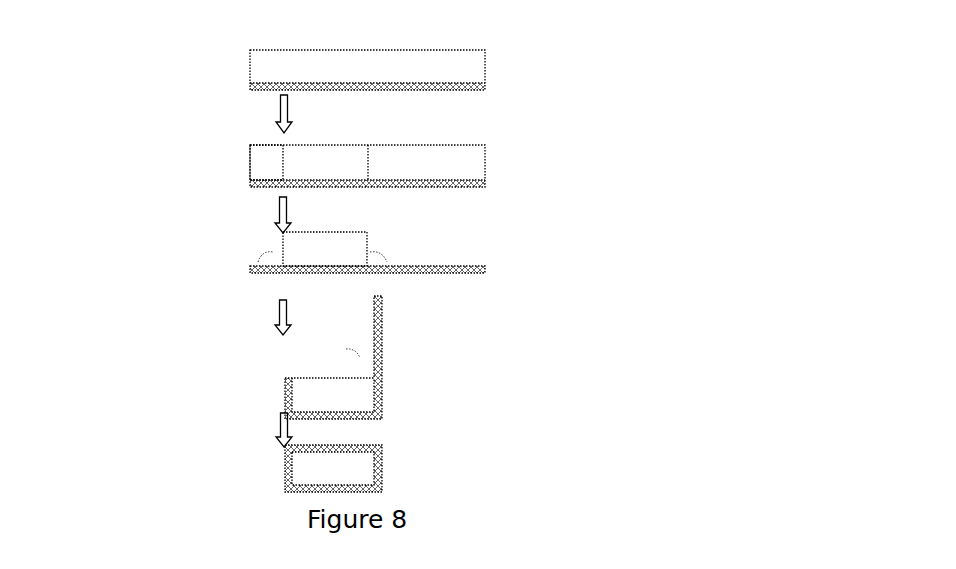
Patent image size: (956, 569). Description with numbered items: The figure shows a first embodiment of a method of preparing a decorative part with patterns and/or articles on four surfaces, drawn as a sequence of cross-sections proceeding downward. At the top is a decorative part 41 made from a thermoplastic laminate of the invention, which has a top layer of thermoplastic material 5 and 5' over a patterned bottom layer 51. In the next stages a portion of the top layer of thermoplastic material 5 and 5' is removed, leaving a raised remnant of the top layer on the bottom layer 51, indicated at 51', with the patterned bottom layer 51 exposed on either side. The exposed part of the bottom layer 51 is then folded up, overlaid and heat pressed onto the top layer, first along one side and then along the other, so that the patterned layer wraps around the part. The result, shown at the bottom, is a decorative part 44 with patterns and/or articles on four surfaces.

The decorative part 41 is at (398, 77).
The thermoplastic material 5 is at (455, 156).
The thermoplastic material 5' is at (180, 136).
The bottom layer 51 is at (462, 256).
The raised block on base layer 51' is at (217, 210).
The decorative part 44 is at (312, 468).